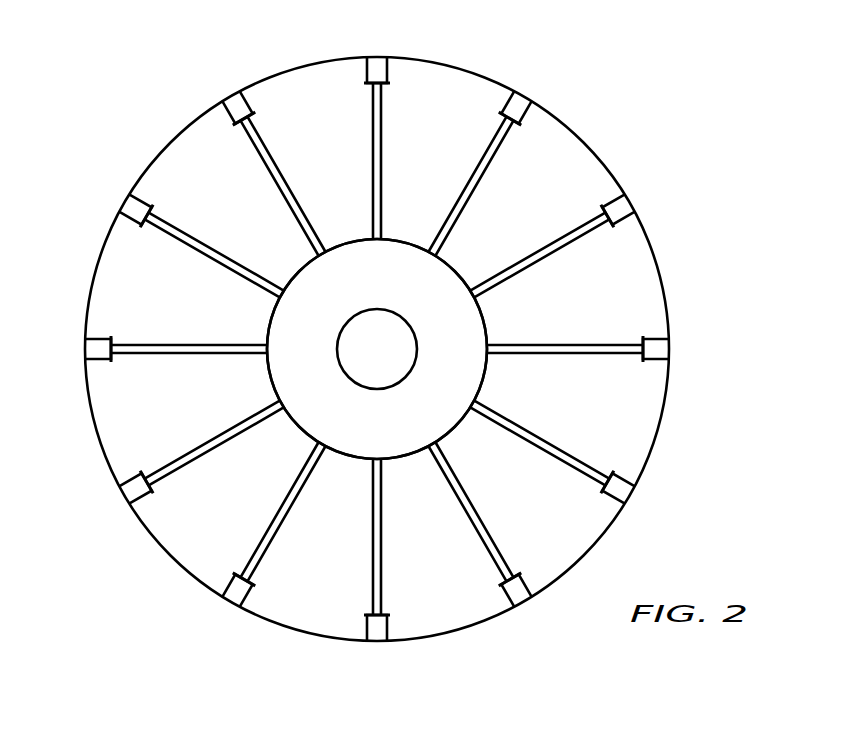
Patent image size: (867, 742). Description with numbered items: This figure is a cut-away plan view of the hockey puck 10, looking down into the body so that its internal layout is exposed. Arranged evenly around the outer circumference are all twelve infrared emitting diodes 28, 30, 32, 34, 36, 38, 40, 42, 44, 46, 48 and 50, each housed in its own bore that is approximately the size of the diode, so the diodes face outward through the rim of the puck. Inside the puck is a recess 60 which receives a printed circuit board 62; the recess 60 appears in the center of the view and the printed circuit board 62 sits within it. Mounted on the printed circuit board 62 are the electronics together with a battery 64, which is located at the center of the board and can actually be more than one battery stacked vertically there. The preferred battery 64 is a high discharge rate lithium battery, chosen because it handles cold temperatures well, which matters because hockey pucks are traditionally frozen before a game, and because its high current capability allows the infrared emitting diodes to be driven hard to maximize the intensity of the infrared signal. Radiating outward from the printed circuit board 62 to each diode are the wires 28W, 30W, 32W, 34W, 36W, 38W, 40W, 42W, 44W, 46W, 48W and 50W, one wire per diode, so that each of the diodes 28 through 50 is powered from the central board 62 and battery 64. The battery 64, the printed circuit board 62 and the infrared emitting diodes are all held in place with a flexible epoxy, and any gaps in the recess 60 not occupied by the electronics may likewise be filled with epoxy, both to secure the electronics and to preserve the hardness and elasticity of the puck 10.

The puck 10 is at (668, 90).
The diode 28 is at (237, 605).
The wire 28W is at (275, 522).
The diode 30 is at (378, 635).
The wire 30W is at (373, 570).
The diode 32 is at (528, 600).
The wire 32W is at (478, 535).
The diode 34 is at (633, 497).
The wire 34W is at (573, 470).
The diode 36 is at (660, 352).
The wire 36W is at (572, 353).
The diode 38 is at (622, 210).
The wire 38W is at (560, 250).
The diode 40 is at (517, 102).
The wire 40W is at (488, 163).
The diode 42 is at (377, 65).
The wire 42W is at (380, 132).
The diode 44 is at (233, 95).
The wire 44W is at (273, 155).
The diode 46 is at (132, 205).
The wire 46W is at (190, 235).
The diode 48 is at (90, 348).
The wire 48W is at (145, 343).
The diode 50 is at (130, 492).
The wire 50W is at (217, 437).
The recess 60 is at (487, 323).
The printed circuit board 62 is at (437, 278).
The battery 64 is at (350, 320).